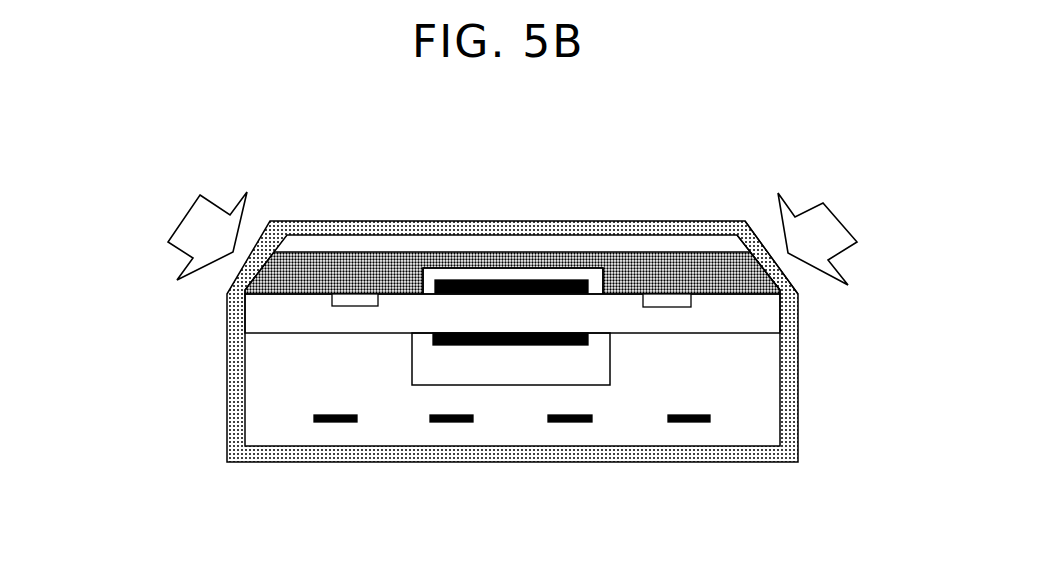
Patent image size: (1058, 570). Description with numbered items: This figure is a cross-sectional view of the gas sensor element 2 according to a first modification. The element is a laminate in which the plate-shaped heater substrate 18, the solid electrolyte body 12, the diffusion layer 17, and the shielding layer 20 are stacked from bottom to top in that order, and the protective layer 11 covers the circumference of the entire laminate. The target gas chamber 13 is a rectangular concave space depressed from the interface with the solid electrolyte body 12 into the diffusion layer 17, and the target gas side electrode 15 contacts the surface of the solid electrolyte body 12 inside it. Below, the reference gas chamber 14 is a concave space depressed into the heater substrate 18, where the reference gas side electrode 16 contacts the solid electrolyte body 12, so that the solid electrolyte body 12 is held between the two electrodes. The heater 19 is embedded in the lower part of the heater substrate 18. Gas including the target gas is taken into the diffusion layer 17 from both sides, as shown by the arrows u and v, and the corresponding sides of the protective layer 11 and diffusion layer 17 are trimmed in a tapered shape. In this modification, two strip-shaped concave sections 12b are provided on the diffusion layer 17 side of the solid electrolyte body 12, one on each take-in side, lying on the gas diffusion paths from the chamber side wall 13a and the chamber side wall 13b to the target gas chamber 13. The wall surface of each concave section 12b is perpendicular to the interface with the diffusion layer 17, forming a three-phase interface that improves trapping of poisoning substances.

The gas sensor element 2 is at (713, 168).
The protective layer 11 is at (403, 228).
The solid electrolyte body 12 is at (742, 316).
The strip-shaped concave section 12b is at (355, 306).
The target gas chamber 13 is at (507, 280).
The chamber side wall 13a is at (423, 268).
The chamber side wall 13b is at (600, 268).
The reference gas chamber 14 is at (512, 367).
The target gas side electrode 15 is at (480, 270).
The reference gas side electrode 16 is at (450, 347).
The diffusion layer 17 is at (733, 255).
The heater substrate 18 is at (742, 388).
The heater 19 is at (688, 422).
The shielding layer 20 is at (602, 245).